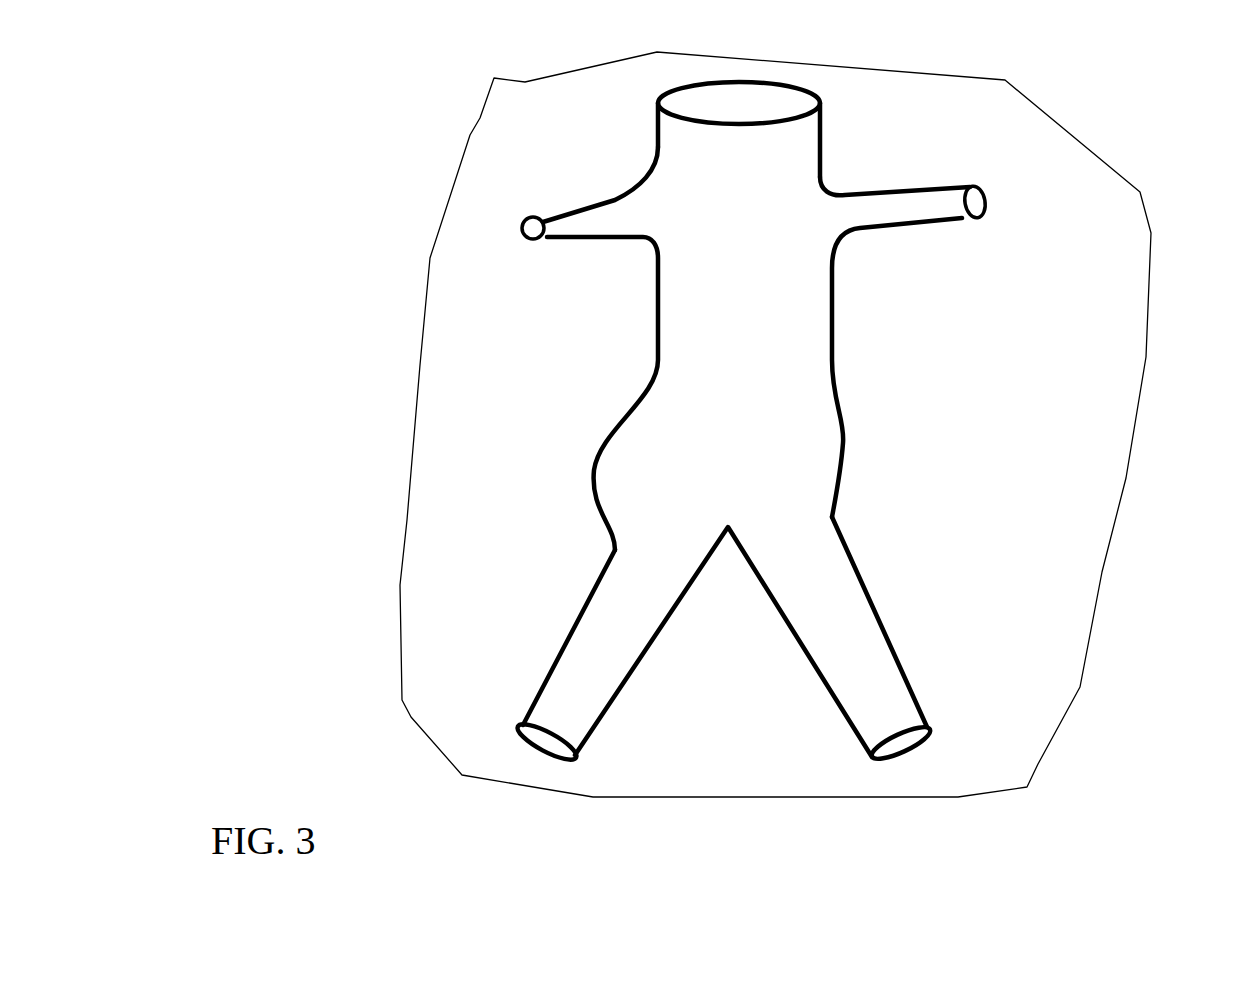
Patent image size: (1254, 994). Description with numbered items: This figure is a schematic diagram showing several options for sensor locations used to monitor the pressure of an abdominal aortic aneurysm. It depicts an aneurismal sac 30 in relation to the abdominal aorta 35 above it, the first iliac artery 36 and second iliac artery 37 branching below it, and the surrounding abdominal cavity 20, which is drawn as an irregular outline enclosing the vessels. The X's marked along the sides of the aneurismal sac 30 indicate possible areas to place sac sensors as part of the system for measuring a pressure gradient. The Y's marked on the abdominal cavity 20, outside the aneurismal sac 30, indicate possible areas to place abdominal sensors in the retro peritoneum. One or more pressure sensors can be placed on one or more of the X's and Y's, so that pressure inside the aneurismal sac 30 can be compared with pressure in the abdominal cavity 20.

The abdominal cavity 20 is at (1058, 616).
The aneurismal sac 30 is at (605, 507).
The abdominal aorta 35 is at (758, 155).
The first iliac artery 36 is at (587, 715).
The second iliac artery 37 is at (873, 715).